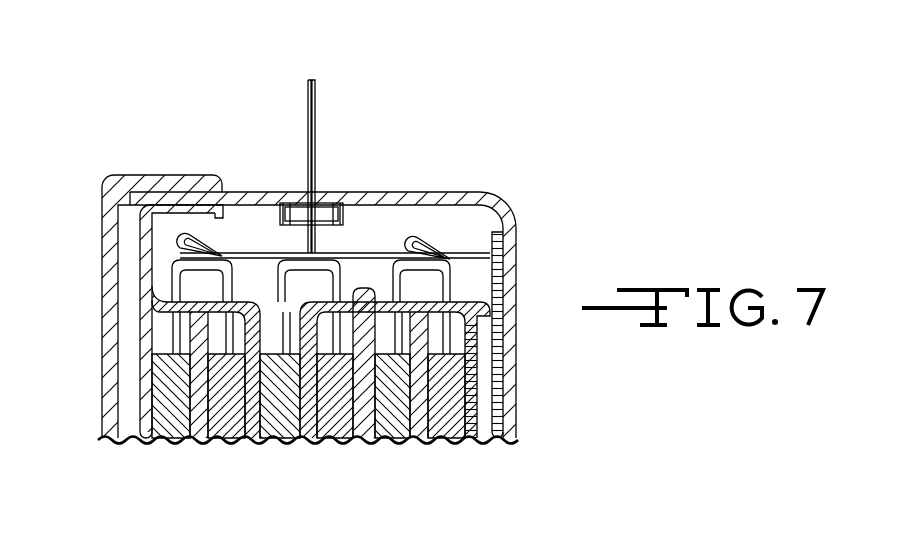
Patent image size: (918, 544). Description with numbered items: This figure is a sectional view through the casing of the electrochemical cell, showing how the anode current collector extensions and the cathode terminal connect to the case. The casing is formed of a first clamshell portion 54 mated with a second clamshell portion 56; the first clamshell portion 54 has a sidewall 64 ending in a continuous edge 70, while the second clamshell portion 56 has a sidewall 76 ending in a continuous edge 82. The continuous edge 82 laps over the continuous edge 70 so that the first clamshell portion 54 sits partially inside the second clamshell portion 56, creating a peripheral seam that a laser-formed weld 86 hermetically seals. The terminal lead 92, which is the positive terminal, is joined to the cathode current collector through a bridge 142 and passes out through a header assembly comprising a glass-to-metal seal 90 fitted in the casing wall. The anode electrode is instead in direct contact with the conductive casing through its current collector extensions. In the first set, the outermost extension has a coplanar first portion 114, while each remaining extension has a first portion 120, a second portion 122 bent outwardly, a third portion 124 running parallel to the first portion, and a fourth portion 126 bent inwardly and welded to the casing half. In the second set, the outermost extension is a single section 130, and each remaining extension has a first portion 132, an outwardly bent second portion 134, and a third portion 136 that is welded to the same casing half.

The first clamshell portion 54 is at (517, 386).
The second clamshell portion 56 is at (134, 246).
The sidewall 64 is at (440, 191).
The continuous edge 70 is at (101, 222).
The sidewall 76 is at (148, 175).
The continuous edge 82 is at (188, 192).
The weld 86 is at (224, 190).
The glass-to-metal seal 90 is at (313, 212).
The terminal lead 92 is at (315, 107).
The first portion 114 is at (145, 321).
The first portion 120 is at (190, 312).
The second portion 122 is at (168, 345).
The third portion 124 is at (143, 271).
The fourth portion 126 is at (207, 215).
The single section 130 is at (476, 346).
The first portion 132 is at (364, 312).
The second portion 134 is at (477, 298).
The third portion 136 is at (462, 258).
The bridge 142 is at (348, 254).